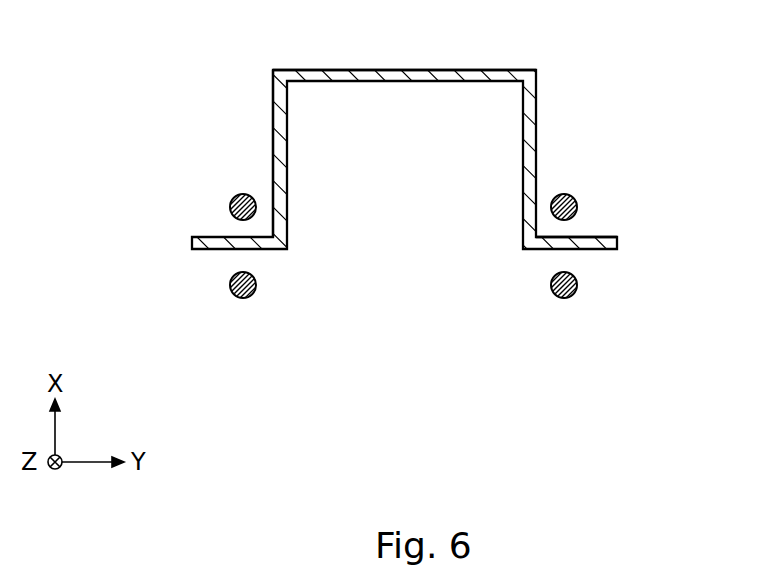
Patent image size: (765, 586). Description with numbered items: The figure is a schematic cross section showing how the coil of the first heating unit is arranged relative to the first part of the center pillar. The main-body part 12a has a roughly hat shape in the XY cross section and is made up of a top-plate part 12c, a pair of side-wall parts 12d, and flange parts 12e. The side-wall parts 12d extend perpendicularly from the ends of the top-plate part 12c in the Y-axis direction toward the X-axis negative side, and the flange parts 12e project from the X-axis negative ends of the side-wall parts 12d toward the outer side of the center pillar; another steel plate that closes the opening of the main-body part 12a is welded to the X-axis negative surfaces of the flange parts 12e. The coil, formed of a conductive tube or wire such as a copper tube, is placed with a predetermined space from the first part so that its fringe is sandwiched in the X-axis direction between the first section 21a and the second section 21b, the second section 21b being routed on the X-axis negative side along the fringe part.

The main-body part 12a is at (547, 113).
The top-plate part 12c is at (470, 69).
The side-wall parts 12d is at (272, 137).
The flange parts 12e is at (619, 242).
The first section 21a is at (578, 202).
The second section 21b is at (578, 284).